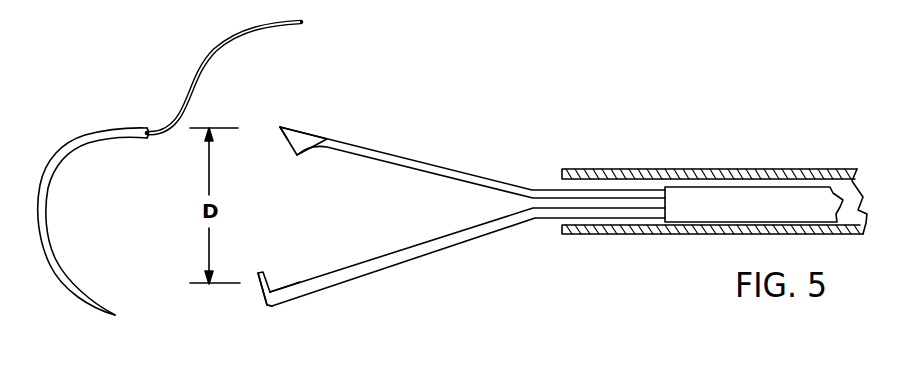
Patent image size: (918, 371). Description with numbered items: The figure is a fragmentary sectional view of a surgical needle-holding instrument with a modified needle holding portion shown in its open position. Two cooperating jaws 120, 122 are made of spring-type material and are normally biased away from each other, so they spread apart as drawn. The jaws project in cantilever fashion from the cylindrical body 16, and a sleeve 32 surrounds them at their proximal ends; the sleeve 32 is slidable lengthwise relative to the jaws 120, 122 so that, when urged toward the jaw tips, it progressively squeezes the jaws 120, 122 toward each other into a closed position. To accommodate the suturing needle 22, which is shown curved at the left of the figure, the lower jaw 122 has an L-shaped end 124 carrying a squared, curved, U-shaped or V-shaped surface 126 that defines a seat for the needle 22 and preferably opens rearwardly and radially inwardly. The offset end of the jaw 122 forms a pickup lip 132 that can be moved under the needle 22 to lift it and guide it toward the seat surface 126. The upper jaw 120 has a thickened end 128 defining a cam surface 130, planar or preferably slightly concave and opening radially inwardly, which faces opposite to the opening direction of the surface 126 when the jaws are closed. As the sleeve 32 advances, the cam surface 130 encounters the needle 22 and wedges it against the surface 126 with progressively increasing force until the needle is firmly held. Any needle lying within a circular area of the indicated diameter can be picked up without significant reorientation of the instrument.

The cylindrical body 16 is at (777, 195).
The suturing needle 22 is at (47, 229).
The sleeve 32 is at (740, 169).
The cooperating jaw 120 is at (456, 127).
The cooperating jaw 122 is at (449, 279).
The L-shaped end 124 is at (265, 301).
The surface 126 is at (273, 290).
The thickened end 128 is at (298, 141).
The cam surface 130 is at (280, 137).
The pickup lip 132 is at (266, 278).